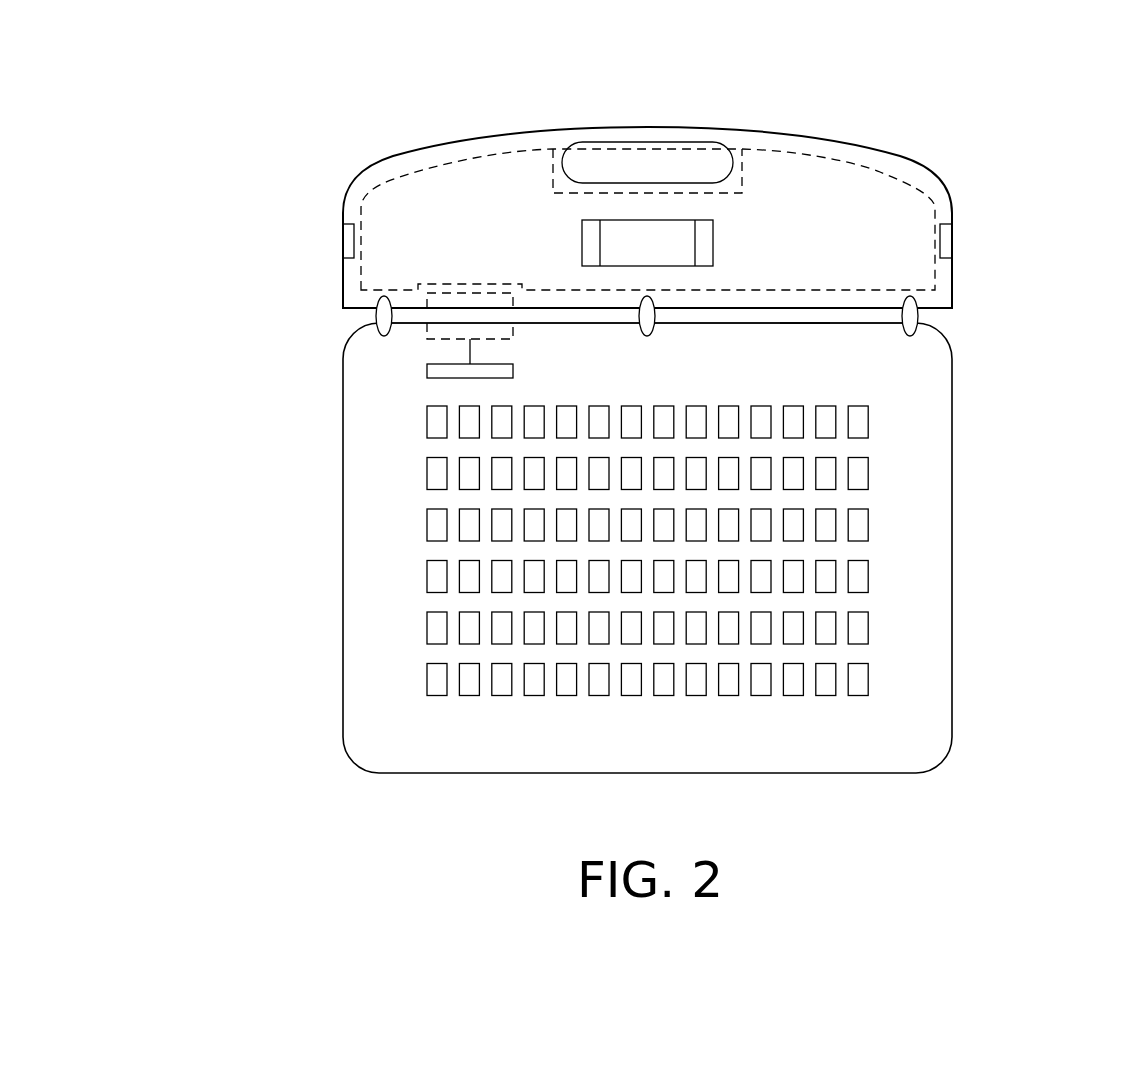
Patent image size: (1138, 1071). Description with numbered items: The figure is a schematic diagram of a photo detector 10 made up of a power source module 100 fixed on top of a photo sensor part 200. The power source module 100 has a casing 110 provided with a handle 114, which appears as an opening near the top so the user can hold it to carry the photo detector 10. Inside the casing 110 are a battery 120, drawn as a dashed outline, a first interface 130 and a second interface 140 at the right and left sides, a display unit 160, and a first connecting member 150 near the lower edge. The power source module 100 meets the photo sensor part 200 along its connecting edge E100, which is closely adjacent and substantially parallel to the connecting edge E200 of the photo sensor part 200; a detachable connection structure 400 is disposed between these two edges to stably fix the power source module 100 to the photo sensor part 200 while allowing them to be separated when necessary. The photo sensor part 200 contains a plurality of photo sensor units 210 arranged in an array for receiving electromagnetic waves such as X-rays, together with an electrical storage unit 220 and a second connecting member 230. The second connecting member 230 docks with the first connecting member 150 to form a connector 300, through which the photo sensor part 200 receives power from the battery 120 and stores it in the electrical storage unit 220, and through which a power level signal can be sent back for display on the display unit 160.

The photo detector 10 is at (1137, 790).
The power source module 100 is at (770, 100).
The casing 110 is at (923, 176).
The handle 114 is at (655, 135).
The battery 120 is at (833, 160).
The first interface 130 is at (950, 240).
The second interface 140 is at (347, 245).
The first connecting member 150 is at (427, 299).
The display unit 160 is at (617, 220).
The photo sensor part 200 is at (967, 704).
The photo sensor units 210 is at (427, 522).
The electrical storage unit 220 is at (427, 333).
The second connecting member 230 is at (427, 370).
The connector 300 is at (262, 367).
The detachable connection structure 400 is at (913, 317).
The connecting edge E100 is at (363, 307).
The connecting edge E200 is at (795, 323).